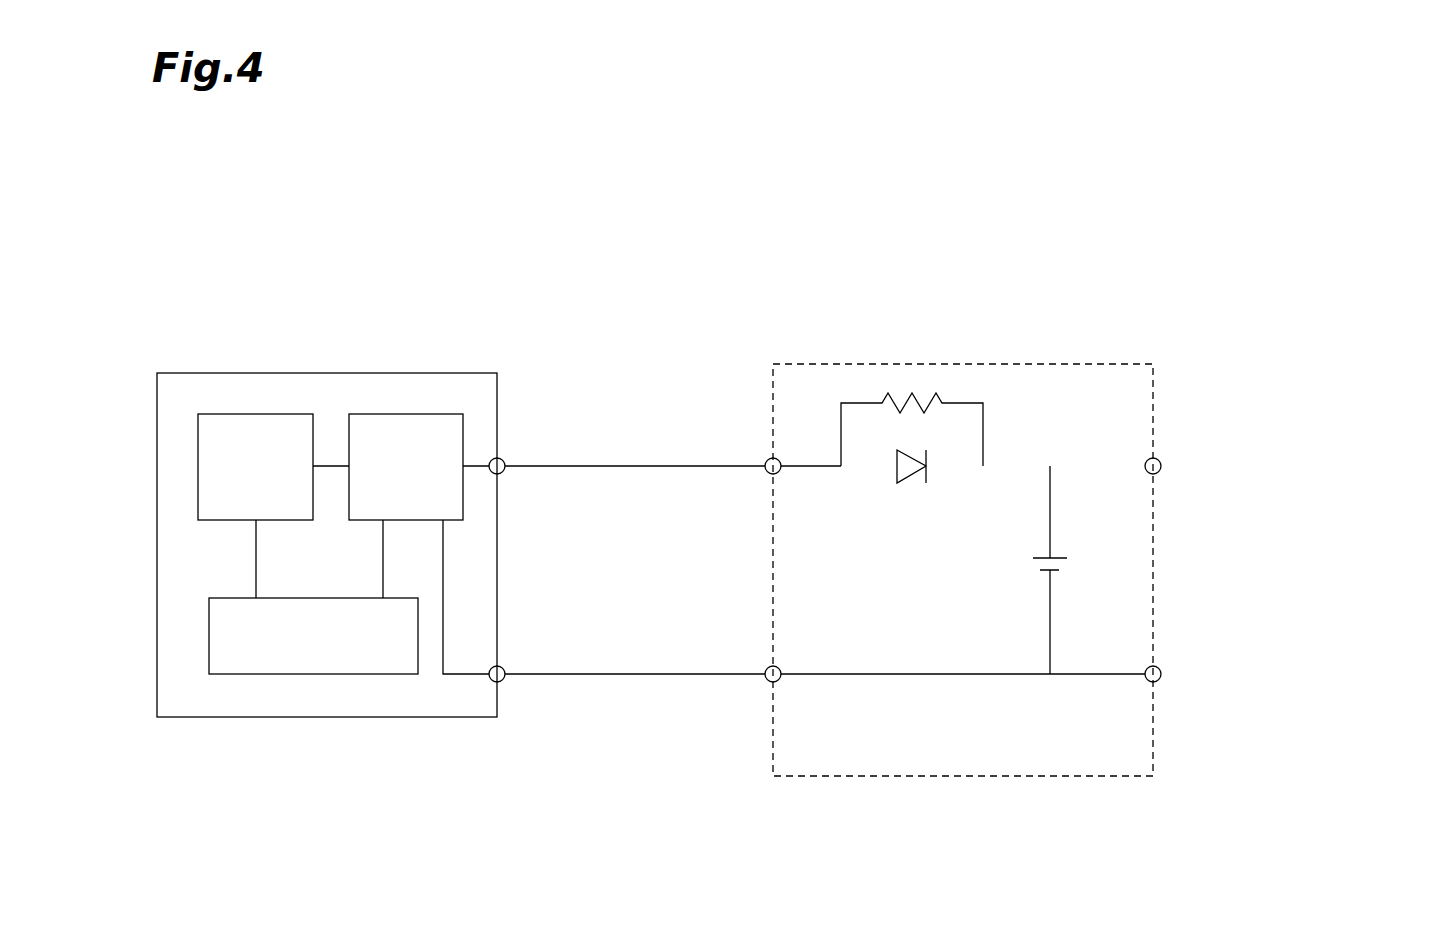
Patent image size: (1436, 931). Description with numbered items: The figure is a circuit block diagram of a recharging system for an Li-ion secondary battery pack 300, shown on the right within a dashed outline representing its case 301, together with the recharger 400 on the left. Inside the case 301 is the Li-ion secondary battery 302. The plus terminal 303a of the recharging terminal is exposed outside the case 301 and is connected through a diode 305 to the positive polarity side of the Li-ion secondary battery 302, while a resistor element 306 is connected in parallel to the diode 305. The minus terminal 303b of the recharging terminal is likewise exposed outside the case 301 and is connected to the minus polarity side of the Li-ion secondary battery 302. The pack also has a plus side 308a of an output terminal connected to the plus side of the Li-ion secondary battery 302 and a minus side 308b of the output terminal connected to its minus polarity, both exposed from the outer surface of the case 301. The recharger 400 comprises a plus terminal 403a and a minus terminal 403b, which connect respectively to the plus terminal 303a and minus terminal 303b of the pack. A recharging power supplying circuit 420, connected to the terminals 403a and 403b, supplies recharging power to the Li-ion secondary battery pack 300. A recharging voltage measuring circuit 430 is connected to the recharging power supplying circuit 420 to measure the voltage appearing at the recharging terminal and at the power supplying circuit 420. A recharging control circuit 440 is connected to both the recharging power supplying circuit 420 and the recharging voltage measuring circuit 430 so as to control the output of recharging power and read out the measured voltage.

The recharger 400 is at (200, 717).
The recharging voltage measuring circuit 430 is at (242, 414).
The recharging power supplying circuit 420 is at (397, 414).
The recharging control circuit 440 is at (367, 674).
The plus terminal 403a is at (505, 460).
The minus terminal 403b is at (505, 668).
The Li-ion secondary battery pack 300 is at (1018, 591).
The case 301 is at (1153, 718).
The plus terminal of recharging terminal 303a is at (768, 458).
The minus terminal of recharging terminal 303b is at (768, 683).
The diode 305 is at (900, 483).
The resistor element 306 is at (922, 395).
The Li-ion secondary battery 302 is at (1060, 555).
The plus side of output terminal 308a is at (1161, 466).
The minus side of output terminal 308b is at (1161, 674).